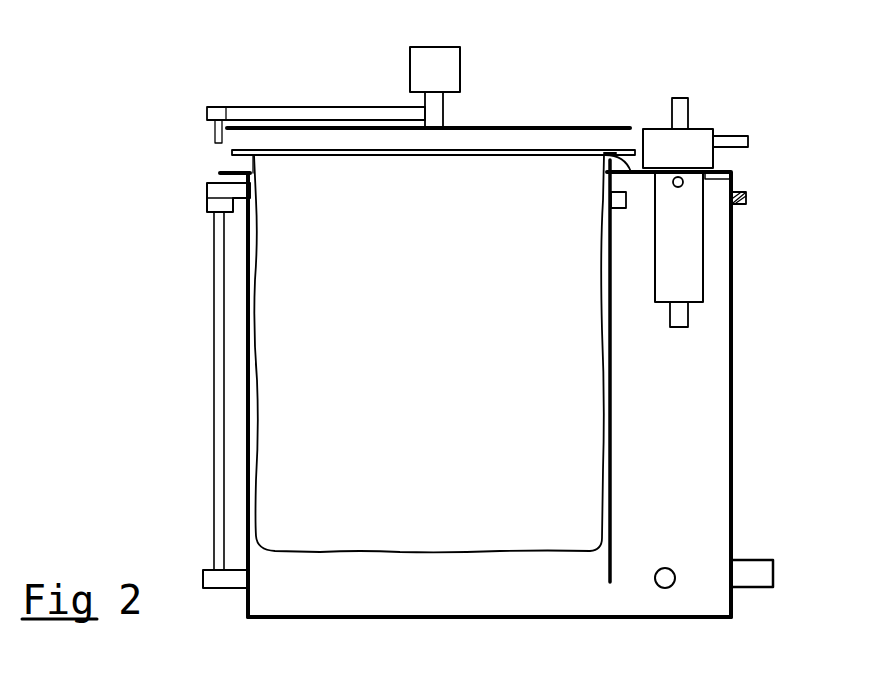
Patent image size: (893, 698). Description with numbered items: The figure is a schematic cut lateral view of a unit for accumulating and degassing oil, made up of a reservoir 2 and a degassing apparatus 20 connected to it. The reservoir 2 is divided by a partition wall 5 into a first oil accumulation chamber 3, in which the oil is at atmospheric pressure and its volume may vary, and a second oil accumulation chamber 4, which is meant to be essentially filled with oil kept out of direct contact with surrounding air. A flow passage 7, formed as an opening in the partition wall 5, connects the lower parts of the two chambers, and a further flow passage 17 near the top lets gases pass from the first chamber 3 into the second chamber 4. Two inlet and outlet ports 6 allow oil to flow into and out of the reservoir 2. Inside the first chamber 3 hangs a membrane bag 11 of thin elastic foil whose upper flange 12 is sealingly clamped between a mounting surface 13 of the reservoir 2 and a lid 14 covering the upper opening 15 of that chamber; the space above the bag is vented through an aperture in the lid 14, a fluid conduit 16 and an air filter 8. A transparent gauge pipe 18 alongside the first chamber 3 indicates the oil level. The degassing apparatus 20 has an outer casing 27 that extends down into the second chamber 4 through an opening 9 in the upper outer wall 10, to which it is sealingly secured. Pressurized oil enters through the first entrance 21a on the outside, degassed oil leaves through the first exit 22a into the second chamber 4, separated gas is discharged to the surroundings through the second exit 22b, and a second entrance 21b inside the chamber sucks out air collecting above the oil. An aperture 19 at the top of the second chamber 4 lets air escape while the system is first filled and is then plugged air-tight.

The reservoir 2 is at (413, 620).
The first oil accumulation chamber 3 is at (294, 597).
The second oil accumulation chamber 4 is at (716, 430).
The partition wall 5 is at (605, 566).
The inlet and outlet ports 6 is at (665, 568).
The flow passage 7 is at (606, 598).
The air filter 8 is at (460, 80).
The opening 9 is at (655, 180).
The upper outer wall 10 is at (605, 155).
The membrane bag 11 is at (262, 268).
The upper flange 12 is at (232, 152).
The mounting surface 13 is at (222, 183).
The lid 14 is at (530, 127).
The upper opening 15 is at (253, 200).
The fluid conduit 16 is at (443, 110).
The flow passage 17 is at (611, 200).
The transparent gauge pipe 18 is at (213, 418).
The aperture 19 is at (745, 205).
The degassing apparatus 20 is at (714, 100).
The first entrance 21a is at (676, 98).
The second entrance 21b is at (683, 182).
The first exit 22a is at (680, 327).
The second exit 22b is at (748, 140).
The outer casing 27 is at (656, 129).